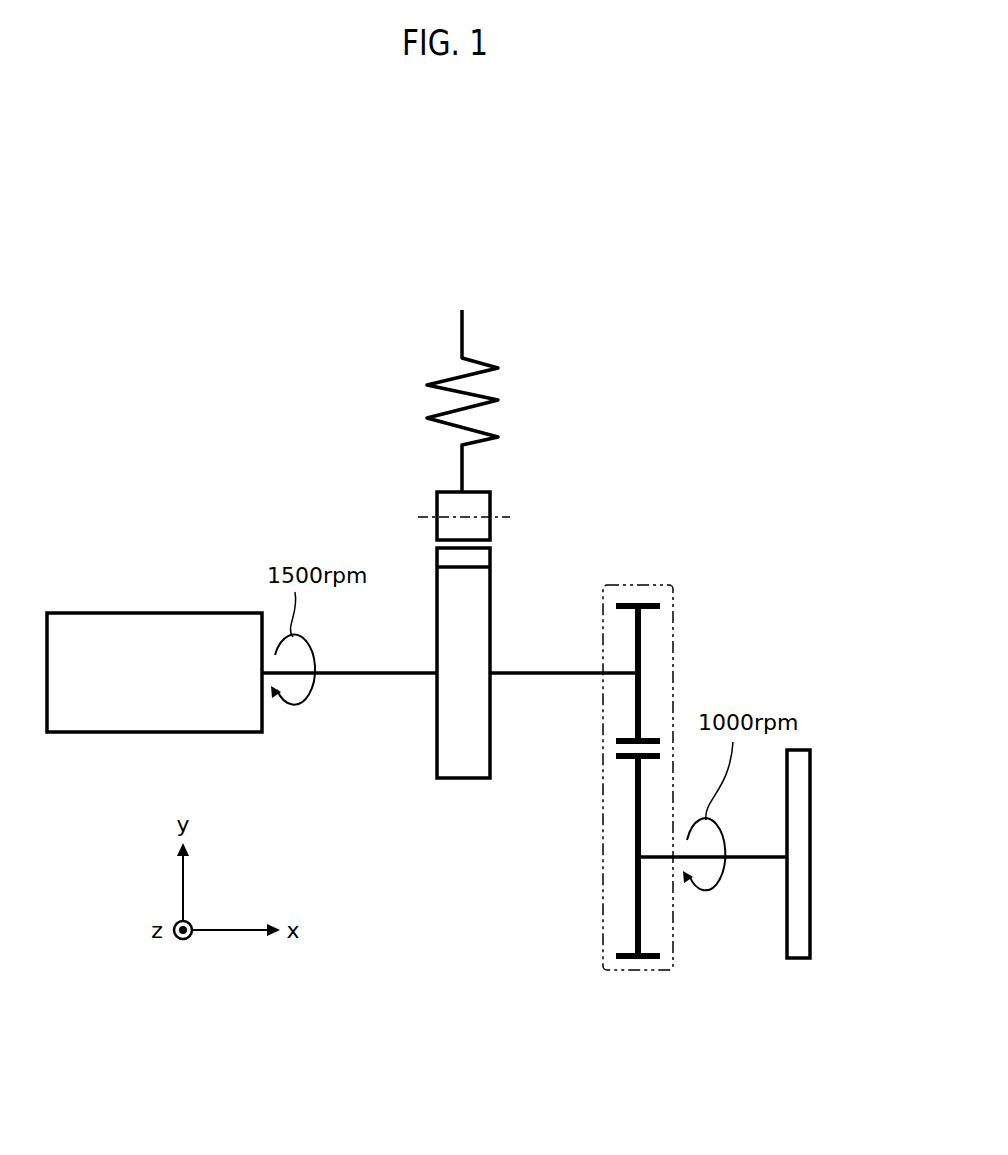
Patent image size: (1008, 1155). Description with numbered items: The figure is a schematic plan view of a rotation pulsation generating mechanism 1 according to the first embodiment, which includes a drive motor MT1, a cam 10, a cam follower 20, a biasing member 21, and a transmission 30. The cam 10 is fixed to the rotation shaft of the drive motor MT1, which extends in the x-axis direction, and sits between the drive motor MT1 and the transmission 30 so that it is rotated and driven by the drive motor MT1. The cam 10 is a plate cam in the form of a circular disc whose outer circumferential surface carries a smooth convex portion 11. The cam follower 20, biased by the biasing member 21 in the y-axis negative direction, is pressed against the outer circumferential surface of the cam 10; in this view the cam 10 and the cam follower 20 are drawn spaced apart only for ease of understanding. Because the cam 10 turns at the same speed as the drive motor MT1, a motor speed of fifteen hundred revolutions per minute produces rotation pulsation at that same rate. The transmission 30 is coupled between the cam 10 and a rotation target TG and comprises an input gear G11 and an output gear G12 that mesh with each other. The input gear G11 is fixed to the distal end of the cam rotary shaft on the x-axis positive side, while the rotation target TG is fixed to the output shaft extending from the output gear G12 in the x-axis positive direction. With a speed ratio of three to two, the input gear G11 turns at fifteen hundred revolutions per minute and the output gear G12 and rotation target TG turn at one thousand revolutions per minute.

The rotation pulsation generating mechanism 1 is at (707, 473).
The drive motor MT1 is at (154, 672).
The cam 10 is at (485, 645).
The convex portion 11 is at (485, 560).
The cam follower 20 is at (485, 507).
The biasing member 21 is at (488, 397).
The transmission 30 is at (675, 649).
The input gear G11 is at (634, 720).
The output gear G12 is at (634, 792).
The rotation target TG is at (808, 833).